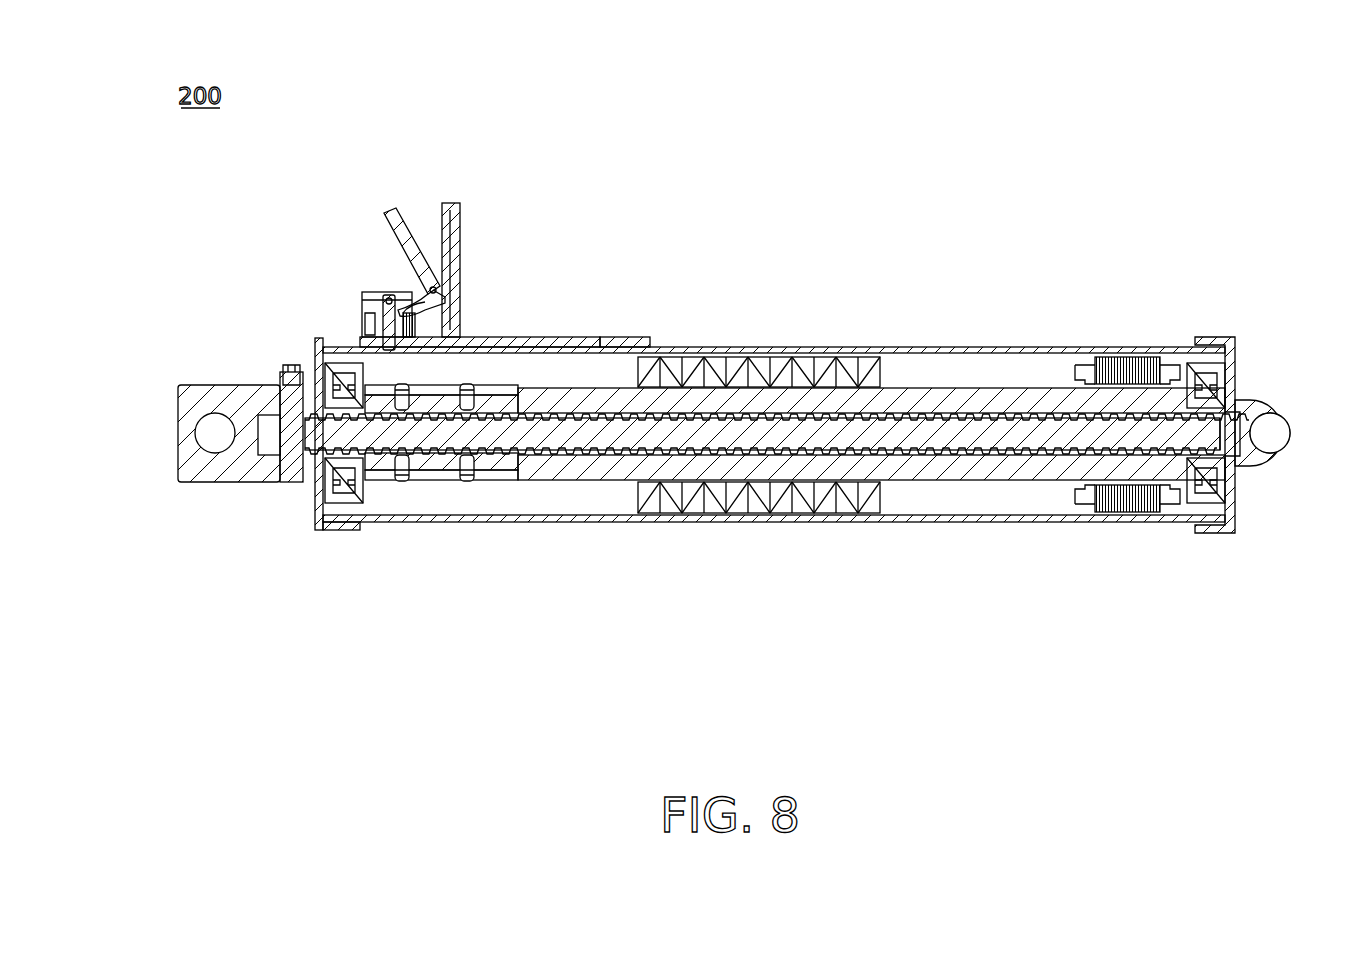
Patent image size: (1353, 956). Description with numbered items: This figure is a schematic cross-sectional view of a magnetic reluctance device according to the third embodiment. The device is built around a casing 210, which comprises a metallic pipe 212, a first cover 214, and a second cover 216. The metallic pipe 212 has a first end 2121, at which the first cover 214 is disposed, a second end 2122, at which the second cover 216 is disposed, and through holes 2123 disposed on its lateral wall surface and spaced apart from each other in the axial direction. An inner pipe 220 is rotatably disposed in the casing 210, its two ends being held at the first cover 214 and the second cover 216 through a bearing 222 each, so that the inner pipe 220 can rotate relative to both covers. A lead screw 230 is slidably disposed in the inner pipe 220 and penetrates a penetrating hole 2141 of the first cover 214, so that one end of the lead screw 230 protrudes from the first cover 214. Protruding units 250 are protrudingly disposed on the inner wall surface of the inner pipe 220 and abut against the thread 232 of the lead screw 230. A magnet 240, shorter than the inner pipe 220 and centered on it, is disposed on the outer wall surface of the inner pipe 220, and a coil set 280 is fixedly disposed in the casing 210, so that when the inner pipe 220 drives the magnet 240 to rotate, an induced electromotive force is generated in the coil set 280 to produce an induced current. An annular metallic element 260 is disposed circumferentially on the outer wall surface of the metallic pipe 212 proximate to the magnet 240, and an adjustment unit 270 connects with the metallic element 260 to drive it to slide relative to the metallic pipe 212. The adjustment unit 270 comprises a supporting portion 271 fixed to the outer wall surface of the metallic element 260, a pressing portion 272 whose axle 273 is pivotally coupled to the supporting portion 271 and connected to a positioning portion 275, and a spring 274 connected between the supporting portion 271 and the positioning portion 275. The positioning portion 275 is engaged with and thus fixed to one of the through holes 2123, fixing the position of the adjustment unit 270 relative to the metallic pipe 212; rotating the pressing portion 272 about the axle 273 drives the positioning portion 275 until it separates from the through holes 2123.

The casing 210 is at (914, 325).
The metallic pipe 212 is at (985, 347).
The first cover 214 is at (318, 500).
The penetrating hole 2141 is at (300, 480).
The second cover 216 is at (1240, 470).
The inner pipe 220 is at (928, 482).
The bearing 222 is at (330, 375).
The lead screw 230 is at (178, 440).
The thread 232 is at (580, 457).
The magnet 240 is at (745, 357).
The protruding unit 250 is at (440, 482).
The metallic element 260 is at (640, 337).
The adjustment unit 270 is at (555, 110).
The supporting portion 271 is at (462, 320).
The pressing portion 272 is at (417, 240).
The axle 273 is at (448, 307).
The spring 274 is at (384, 305).
The positioning portion 275 is at (395, 298).
The coil set 280 is at (1122, 357).
The first end 2121 is at (342, 528).
The second end 2122 is at (1175, 528).
The through hole 2123 is at (548, 337).